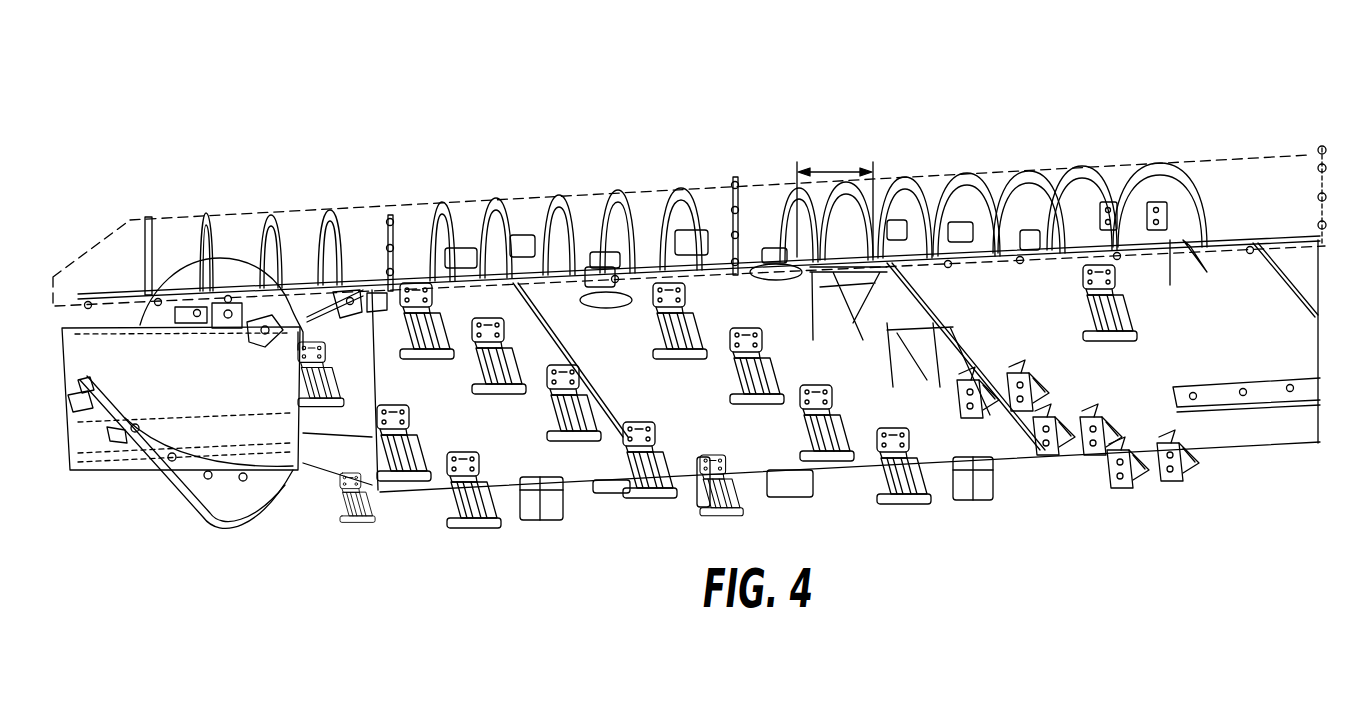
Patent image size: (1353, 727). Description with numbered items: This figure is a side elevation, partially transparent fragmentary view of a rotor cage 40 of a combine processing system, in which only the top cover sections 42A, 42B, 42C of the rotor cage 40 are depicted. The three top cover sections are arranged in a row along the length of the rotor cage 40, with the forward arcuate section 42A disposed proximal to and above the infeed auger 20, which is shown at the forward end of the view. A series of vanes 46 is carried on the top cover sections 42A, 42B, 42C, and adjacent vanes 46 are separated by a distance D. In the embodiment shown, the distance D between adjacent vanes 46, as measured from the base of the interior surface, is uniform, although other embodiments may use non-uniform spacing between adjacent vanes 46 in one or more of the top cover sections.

The infeed auger 20 is at (240, 393).
The rotor cage 40 is at (1293, 160).
The forward arcuate section 42A is at (320, 147).
The top cover section 42B is at (630, 147).
The top cover section 42C is at (1026, 148).
The vane 46 is at (927, 182).
The distance D is at (835, 199).